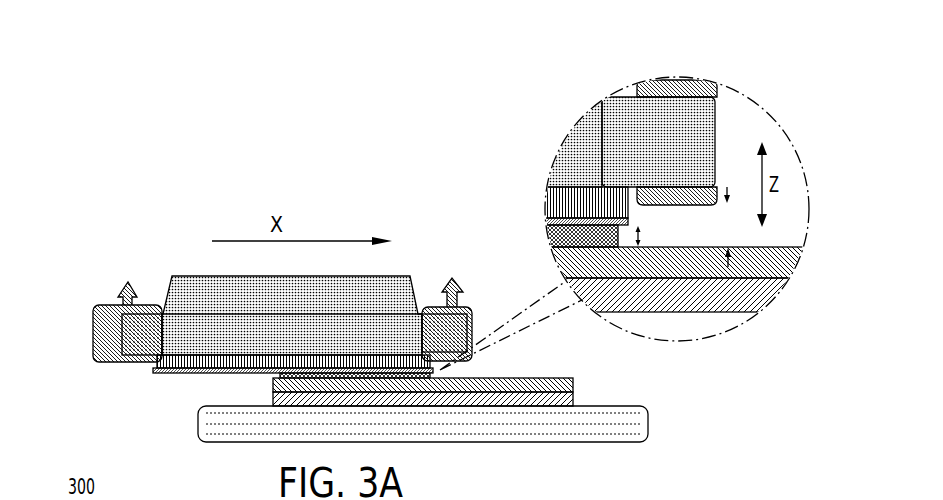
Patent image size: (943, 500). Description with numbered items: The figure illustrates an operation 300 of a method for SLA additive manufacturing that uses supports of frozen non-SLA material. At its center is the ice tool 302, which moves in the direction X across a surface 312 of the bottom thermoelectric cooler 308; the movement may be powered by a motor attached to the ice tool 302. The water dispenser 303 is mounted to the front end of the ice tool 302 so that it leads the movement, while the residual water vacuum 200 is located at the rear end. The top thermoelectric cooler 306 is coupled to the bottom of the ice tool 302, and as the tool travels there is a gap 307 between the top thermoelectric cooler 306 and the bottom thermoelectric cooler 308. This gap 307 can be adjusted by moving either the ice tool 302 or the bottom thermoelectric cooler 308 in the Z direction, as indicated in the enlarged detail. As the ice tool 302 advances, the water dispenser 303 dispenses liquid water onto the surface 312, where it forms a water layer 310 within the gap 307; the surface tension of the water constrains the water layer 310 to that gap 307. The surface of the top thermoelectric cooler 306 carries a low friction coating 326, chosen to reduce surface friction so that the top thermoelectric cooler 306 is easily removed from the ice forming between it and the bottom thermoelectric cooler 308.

The SLA additive manufacturing operation 300 is at (88, 190).
The ice tool 302 is at (203, 284).
The residual water vacuum 200 is at (94, 330).
The water dispenser 303 is at (462, 307).
The top thermoelectric cooler 306 is at (156, 366).
The low friction coating 326 is at (188, 374).
The water layer 310 is at (280, 378).
The bottom thermoelectric cooler 308 is at (584, 379).
The surface 312 is at (560, 366).
The gap 307 is at (723, 229).